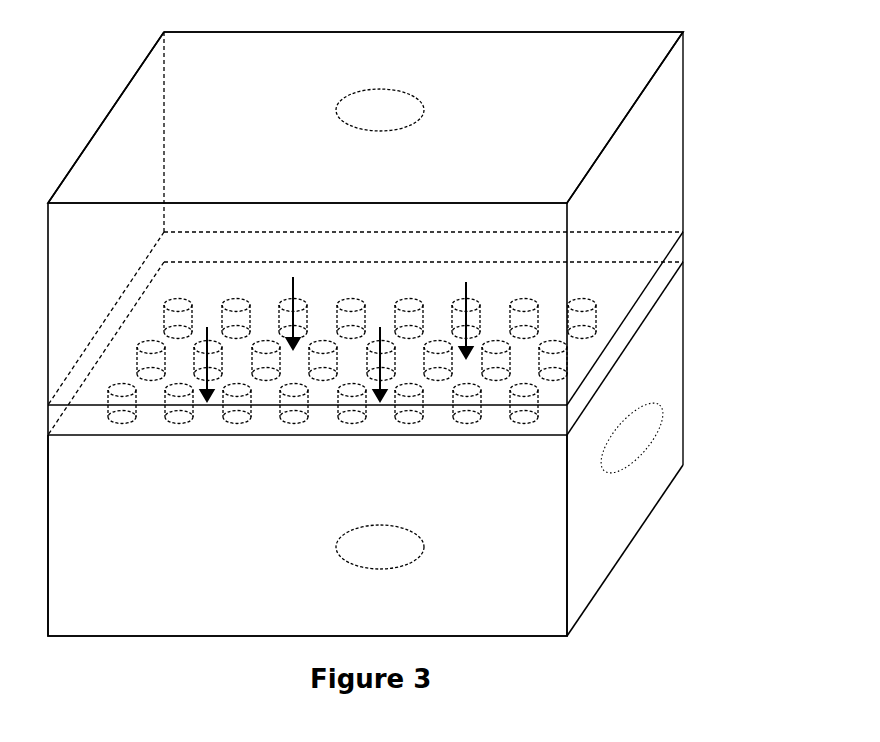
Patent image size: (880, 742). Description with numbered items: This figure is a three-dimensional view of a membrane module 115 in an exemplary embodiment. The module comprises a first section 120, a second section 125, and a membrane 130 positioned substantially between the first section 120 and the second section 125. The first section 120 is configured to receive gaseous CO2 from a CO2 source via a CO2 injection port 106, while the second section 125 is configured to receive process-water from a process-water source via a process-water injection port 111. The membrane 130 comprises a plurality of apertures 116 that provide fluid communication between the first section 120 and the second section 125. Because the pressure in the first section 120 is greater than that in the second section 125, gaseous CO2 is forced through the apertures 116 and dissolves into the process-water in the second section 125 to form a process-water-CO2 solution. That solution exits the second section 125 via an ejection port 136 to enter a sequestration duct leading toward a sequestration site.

The CO2 injection port 106 is at (380, 111).
The process-water injection port 111 is at (380, 549).
The fluid processing device 115 is at (676, 572).
The apertures 116 is at (523, 393).
The first section 120 is at (632, 168).
The second section 125 is at (610, 492).
The membrane 130 is at (652, 297).
The ejection port 136 is at (632, 442).